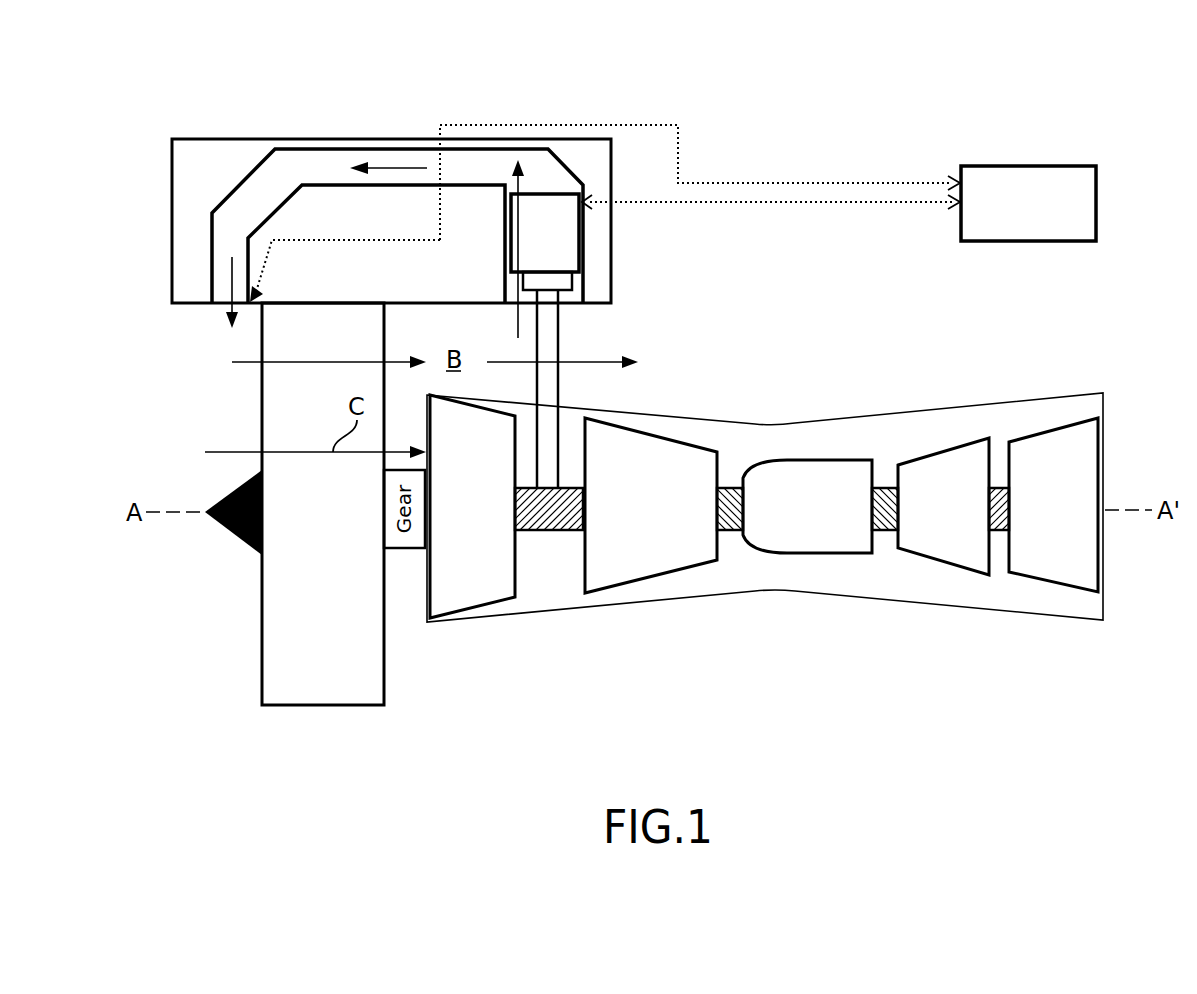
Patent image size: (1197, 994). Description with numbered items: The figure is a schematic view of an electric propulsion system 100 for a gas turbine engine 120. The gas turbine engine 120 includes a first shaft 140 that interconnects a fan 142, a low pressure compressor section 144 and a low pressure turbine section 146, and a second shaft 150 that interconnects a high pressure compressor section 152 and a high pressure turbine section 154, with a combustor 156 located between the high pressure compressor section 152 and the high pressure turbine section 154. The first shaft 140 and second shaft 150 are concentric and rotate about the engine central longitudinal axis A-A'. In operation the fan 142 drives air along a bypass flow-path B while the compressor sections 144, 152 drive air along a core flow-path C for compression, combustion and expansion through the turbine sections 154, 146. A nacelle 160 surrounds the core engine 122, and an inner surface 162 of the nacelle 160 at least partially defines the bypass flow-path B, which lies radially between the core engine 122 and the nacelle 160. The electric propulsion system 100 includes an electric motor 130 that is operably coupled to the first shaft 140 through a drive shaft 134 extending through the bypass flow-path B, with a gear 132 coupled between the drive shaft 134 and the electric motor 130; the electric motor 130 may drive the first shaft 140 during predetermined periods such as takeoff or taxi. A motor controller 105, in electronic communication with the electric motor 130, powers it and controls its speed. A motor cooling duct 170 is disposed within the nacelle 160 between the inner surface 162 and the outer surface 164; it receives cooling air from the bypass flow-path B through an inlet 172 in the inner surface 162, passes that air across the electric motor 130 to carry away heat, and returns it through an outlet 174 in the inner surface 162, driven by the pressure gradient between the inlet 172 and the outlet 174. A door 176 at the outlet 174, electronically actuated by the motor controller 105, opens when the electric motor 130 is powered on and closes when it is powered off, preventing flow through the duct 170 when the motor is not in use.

The electric propulsion system 100 is at (742, 122).
The motor controller 105 is at (1096, 180).
The gas turbine engine 120 is at (792, 268).
The core engine 122 is at (807, 417).
The electric motor 130 is at (568, 230).
The gear 132 is at (568, 278).
The drive shaft 134 is at (560, 378).
The first shaft 140 is at (563, 530).
The fan 142 is at (357, 705).
The low pressure compressor section 144 is at (477, 610).
The low pressure turbine section 146 is at (1058, 583).
The second shaft 150 is at (732, 530).
The high pressure compressor section 152 is at (653, 578).
The high pressure turbine section 154 is at (940, 562).
The combustor 156 is at (818, 553).
The nacelle 160 is at (227, 139).
The inner surface 162 is at (495, 303).
The outer surface 164 is at (283, 142).
The motor cooling duct 170 is at (390, 150).
The inlet 172 is at (572, 318).
The outlet 174 is at (217, 316).
The door 176 is at (218, 300).